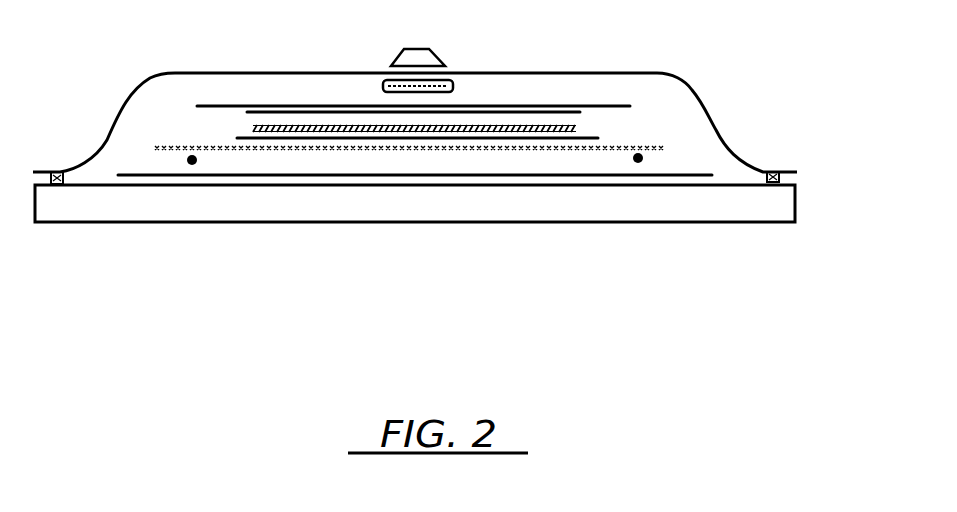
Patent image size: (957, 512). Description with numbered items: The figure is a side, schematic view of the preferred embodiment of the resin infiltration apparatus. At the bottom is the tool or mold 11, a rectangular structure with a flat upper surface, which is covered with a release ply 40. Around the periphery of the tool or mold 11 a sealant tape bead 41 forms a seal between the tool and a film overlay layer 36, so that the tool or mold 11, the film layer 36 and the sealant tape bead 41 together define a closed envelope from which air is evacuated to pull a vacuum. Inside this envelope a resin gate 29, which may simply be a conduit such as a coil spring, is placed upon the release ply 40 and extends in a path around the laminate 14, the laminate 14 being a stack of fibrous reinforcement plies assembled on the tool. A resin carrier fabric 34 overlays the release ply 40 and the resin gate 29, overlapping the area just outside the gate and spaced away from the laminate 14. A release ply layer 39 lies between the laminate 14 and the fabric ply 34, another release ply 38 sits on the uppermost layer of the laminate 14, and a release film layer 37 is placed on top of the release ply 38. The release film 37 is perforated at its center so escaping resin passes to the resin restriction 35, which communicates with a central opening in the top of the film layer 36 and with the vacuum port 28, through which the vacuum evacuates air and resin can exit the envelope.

The tool or mold 11 is at (747, 222).
The laminate 14 is at (576, 128).
The vacuum port 28 is at (412, 48).
The resin gate 29 is at (638, 163).
The resin carrier fabric 34 is at (153, 148).
The resin restriction 35 is at (455, 86).
The film layer 36 is at (337, 72).
The release film layer 37 is at (222, 105).
The release ply 38 is at (247, 112).
The release ply layer 39 is at (598, 137).
The release ply 40 is at (565, 175).
The sealant tape bead 41 is at (782, 175).